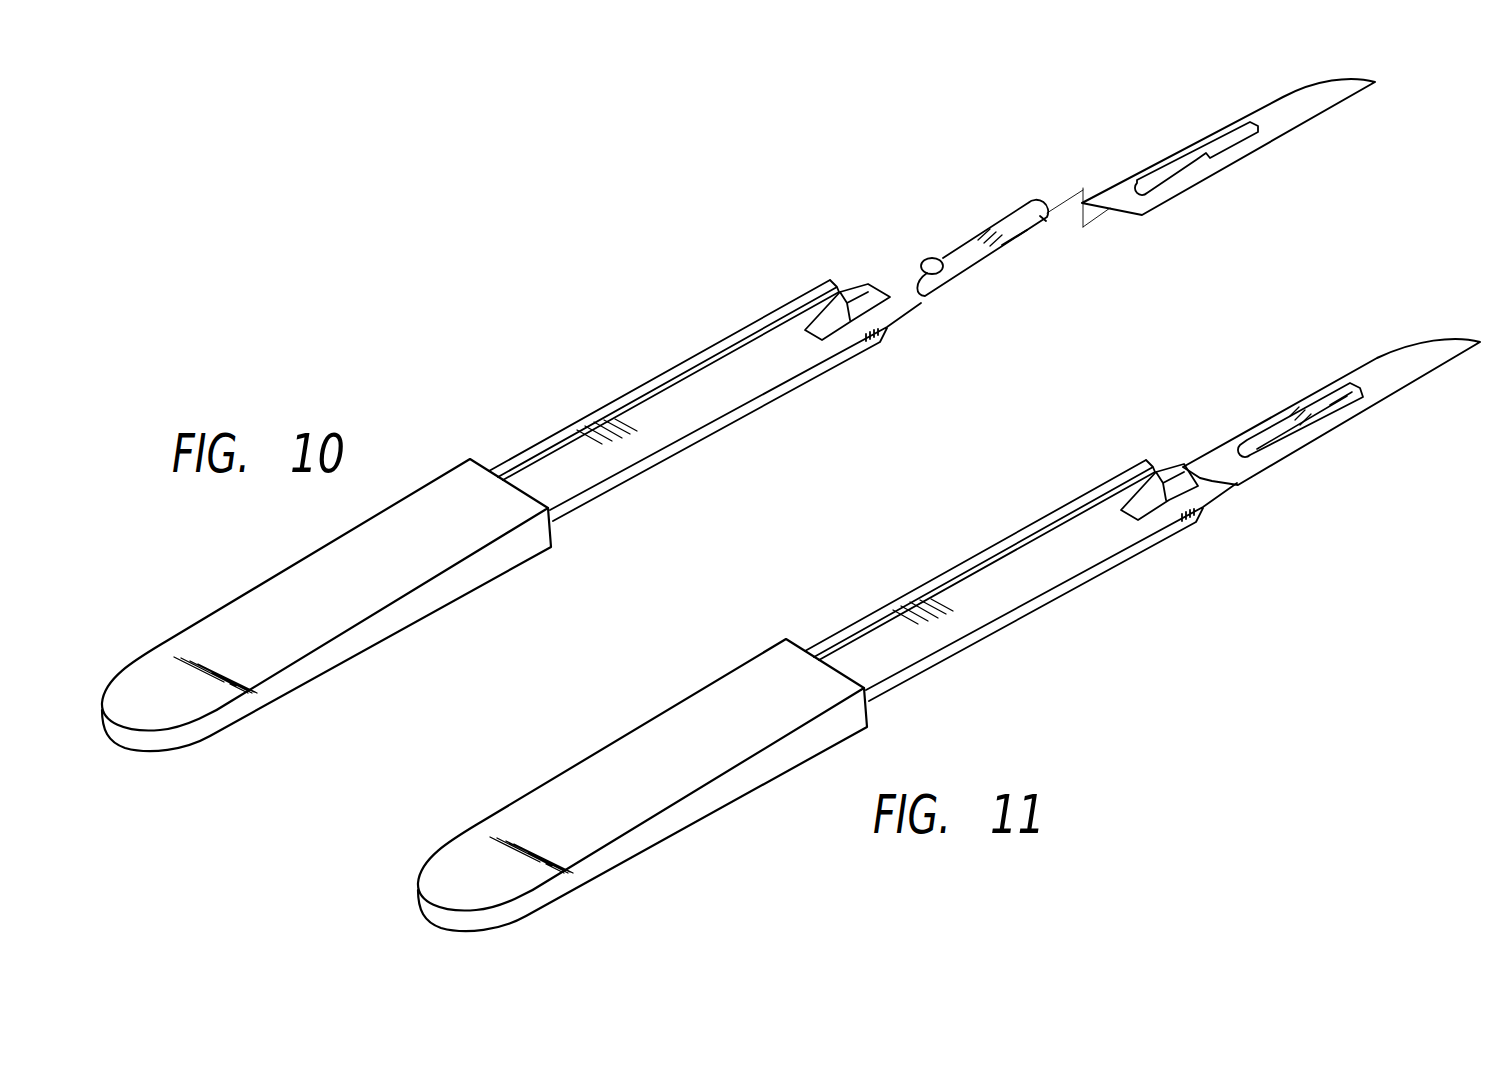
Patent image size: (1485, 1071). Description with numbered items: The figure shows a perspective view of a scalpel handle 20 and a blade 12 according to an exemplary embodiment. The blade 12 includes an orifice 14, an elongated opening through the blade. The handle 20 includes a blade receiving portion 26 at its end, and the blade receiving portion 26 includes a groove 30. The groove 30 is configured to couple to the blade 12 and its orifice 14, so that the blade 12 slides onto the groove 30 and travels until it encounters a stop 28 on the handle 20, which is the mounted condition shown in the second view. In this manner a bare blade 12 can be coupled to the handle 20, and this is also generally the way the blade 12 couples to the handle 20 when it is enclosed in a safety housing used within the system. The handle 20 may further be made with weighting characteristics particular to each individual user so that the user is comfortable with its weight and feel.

In FIG. 10, the blade 12 is at (1323, 100).
In FIG. 11, the blade 12 is at (1425, 348).
In FIG. 10, the orifice 14 is at (1173, 172).
In FIG. 11, the orifice 14 is at (1363, 397).
In FIG. 10, the handle 20 is at (512, 348).
In FIG. 11, the handle 20 is at (784, 602).
In FIG. 10, the blade receiving portion 26 is at (937, 260).
In FIG. 11, the blade receiving portion 26 is at (1323, 398).
In FIG. 10, the stop 28 is at (867, 292).
In FIG. 11, the stop 28 is at (1178, 478).
In FIG. 10, the groove 30 is at (1027, 237).
In FIG. 11, the groove 30 is at (1340, 420).